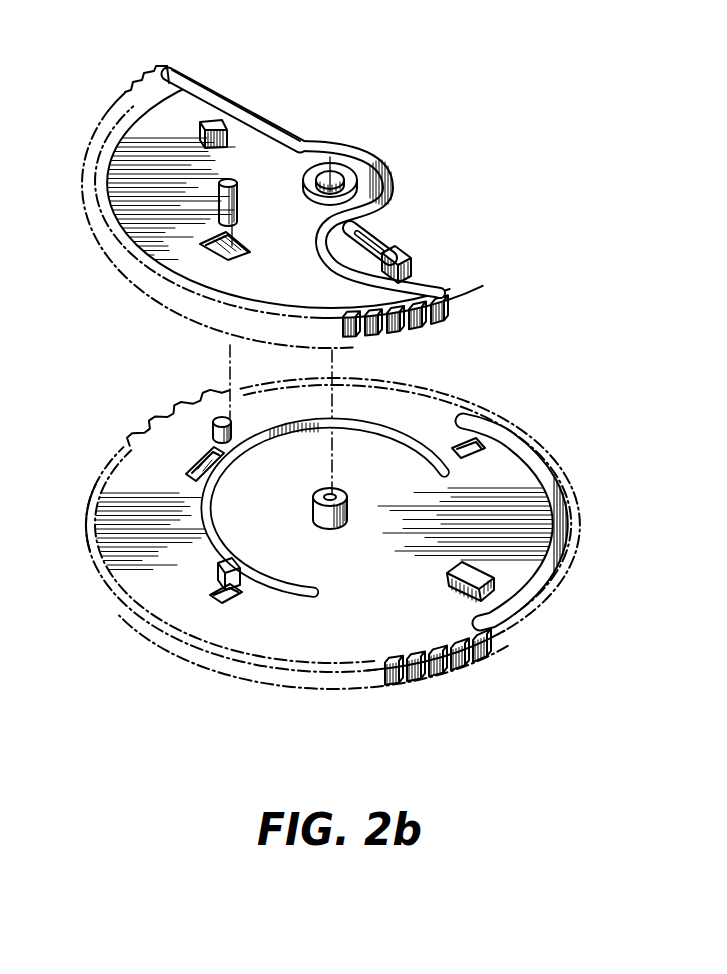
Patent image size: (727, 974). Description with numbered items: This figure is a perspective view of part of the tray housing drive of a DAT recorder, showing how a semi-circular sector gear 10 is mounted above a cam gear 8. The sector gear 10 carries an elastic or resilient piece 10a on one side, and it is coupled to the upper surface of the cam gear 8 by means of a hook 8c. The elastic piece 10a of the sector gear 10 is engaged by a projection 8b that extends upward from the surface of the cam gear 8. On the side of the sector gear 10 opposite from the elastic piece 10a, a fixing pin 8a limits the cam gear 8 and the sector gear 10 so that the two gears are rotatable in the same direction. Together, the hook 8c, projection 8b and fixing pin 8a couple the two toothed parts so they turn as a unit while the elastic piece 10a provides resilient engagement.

The sector gear 10 is at (153, 118).
The elastic piece 10a is at (393, 250).
The cam gear 8 is at (290, 645).
The fixing pin 8a is at (212, 425).
The projection 8b is at (493, 572).
The hook 8c is at (215, 572).